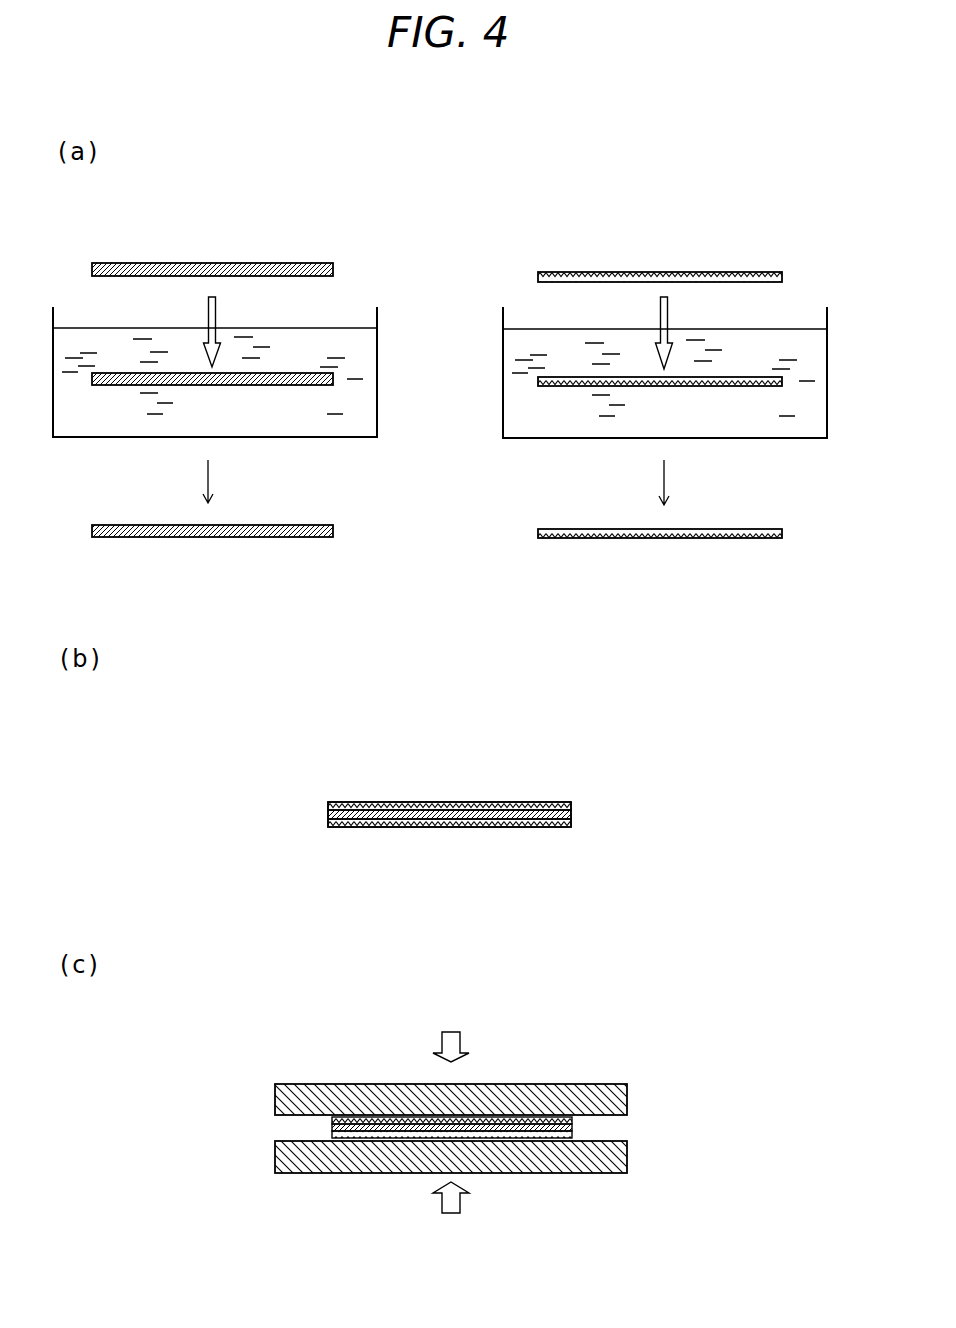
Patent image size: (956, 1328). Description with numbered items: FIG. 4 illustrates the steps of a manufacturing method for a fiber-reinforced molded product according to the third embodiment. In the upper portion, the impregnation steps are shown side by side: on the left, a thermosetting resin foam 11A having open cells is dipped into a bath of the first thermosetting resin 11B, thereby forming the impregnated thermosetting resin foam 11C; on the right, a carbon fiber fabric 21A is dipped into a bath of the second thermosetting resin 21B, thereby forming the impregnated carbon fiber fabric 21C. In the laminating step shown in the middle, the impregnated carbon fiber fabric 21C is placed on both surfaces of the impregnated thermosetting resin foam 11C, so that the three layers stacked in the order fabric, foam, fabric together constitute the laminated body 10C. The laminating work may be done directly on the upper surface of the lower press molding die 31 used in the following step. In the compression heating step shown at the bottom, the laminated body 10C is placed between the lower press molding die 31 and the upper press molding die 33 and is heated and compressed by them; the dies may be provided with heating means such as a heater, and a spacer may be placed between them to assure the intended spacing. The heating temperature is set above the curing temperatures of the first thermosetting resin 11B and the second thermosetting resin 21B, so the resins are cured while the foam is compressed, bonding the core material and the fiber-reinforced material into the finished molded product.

The thermosetting resin foam 11A is at (300, 263).
The first thermosetting resin 11B is at (335, 342).
The impregnated thermosetting resin foam 11C is at (312, 525).
The carbon fiber fabric 21A is at (725, 272).
The second thermosetting resin 21B is at (757, 347).
The impregnated carbon fiber fabric 21C is at (728, 529).
The laminated body 10C is at (688, 750).
The upper press molding die 33 is at (560, 1084).
The lower press molding die 31 is at (553, 1165).